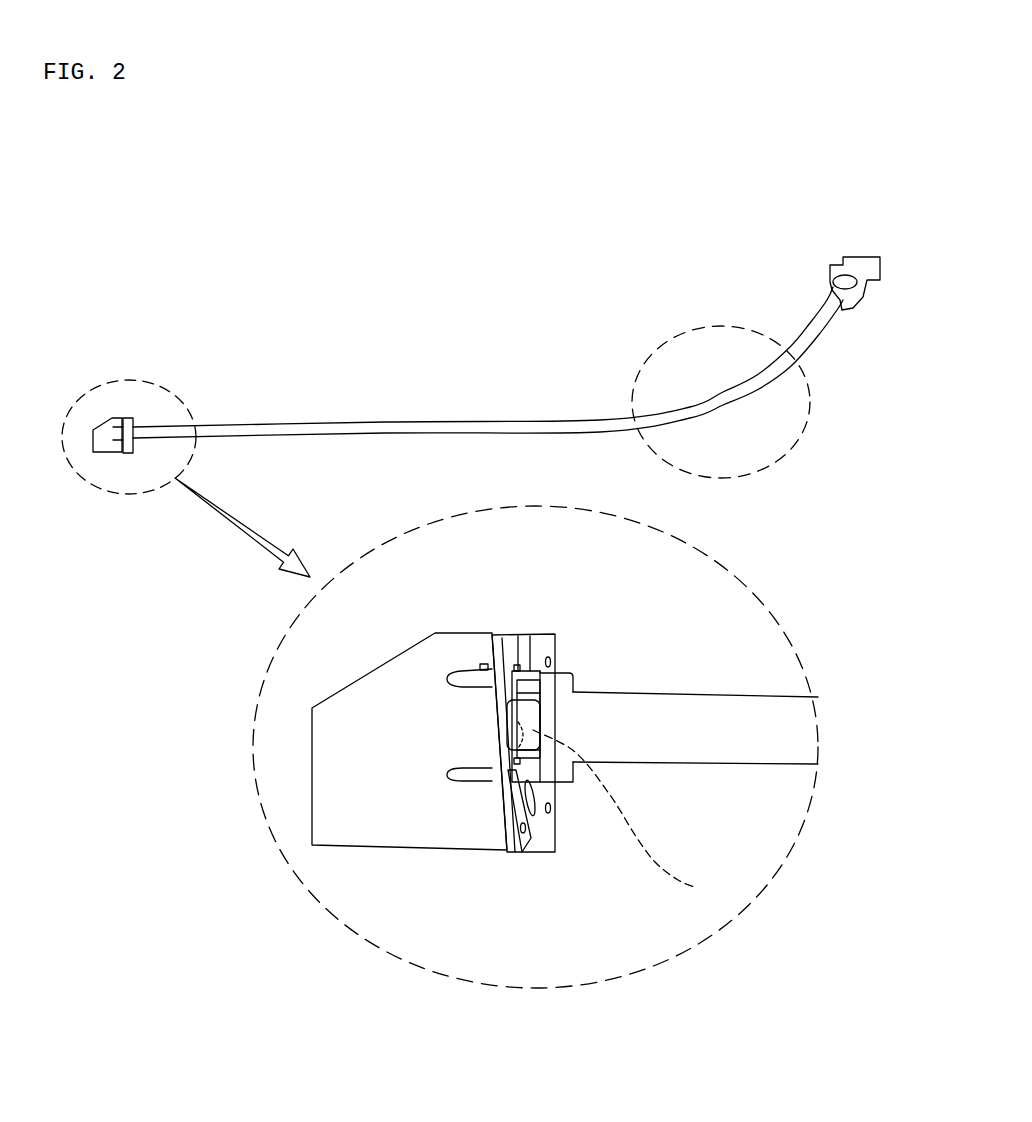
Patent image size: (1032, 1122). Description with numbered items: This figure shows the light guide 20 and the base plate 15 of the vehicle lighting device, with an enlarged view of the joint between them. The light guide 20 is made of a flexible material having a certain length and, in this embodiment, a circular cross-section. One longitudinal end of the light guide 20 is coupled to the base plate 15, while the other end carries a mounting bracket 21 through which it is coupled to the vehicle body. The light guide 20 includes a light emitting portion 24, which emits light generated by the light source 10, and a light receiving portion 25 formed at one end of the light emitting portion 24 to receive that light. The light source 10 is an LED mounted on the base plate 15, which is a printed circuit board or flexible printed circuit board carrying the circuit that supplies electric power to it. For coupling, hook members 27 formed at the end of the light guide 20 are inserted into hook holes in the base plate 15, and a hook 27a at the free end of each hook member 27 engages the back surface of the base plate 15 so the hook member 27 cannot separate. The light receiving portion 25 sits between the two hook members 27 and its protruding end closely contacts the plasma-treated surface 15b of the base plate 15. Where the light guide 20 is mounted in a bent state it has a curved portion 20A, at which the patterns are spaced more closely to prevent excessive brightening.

The light source 10 is at (624, 813).
The base plate 15 is at (100, 432).
The plasma-treated surface 15b is at (540, 836).
The light guide 20 is at (520, 412).
The curved portion 20A is at (782, 456).
The mounting bracket 21 is at (855, 275).
The light emitting portion 24 is at (384, 427).
The light receiving portion 25 is at (533, 708).
The hook member 27 is at (517, 667).
The hook 27a is at (472, 668).